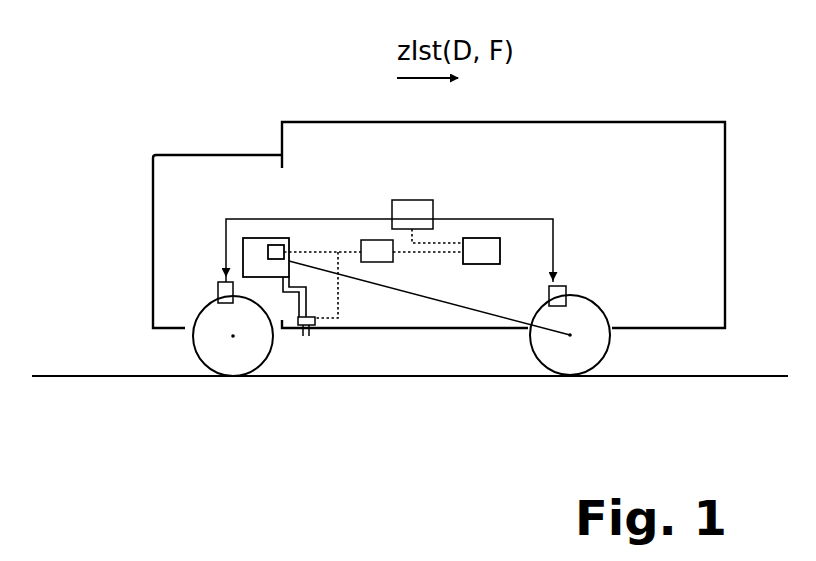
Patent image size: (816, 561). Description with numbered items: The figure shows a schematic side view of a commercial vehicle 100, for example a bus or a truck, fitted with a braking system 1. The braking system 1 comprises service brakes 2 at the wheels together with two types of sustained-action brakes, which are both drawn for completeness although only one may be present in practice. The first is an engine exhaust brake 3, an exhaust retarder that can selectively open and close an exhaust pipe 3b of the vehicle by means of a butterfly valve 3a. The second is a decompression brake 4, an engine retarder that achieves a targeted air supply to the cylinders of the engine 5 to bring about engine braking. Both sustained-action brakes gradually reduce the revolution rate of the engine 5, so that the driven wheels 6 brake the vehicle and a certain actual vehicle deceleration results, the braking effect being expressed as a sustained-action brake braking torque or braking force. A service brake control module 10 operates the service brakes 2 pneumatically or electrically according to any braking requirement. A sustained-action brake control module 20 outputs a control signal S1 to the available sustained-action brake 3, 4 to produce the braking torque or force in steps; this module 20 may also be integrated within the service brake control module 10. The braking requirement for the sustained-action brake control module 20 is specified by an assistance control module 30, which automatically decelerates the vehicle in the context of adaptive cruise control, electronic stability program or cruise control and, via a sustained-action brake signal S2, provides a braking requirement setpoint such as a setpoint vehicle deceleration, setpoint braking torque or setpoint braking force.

The commercial vehicle 100 is at (280, 121).
The braking system 1 is at (508, 177).
The service brakes 2 is at (218, 284).
The engine exhaust brake 3 is at (339, 373).
The butterfly valve 3a is at (315, 326).
The exhaust pipe 3b is at (305, 340).
The decompression brake 4 is at (278, 236).
The engine 5 is at (253, 240).
The driven wheels 6 is at (565, 360).
The service brake control module 10 is at (412, 206).
The sustained-action brake control module 20 is at (380, 253).
The assistance control module 30 is at (500, 252).
The control signal S1 is at (348, 249).
The sustained-action brake signal S2 is at (448, 244).